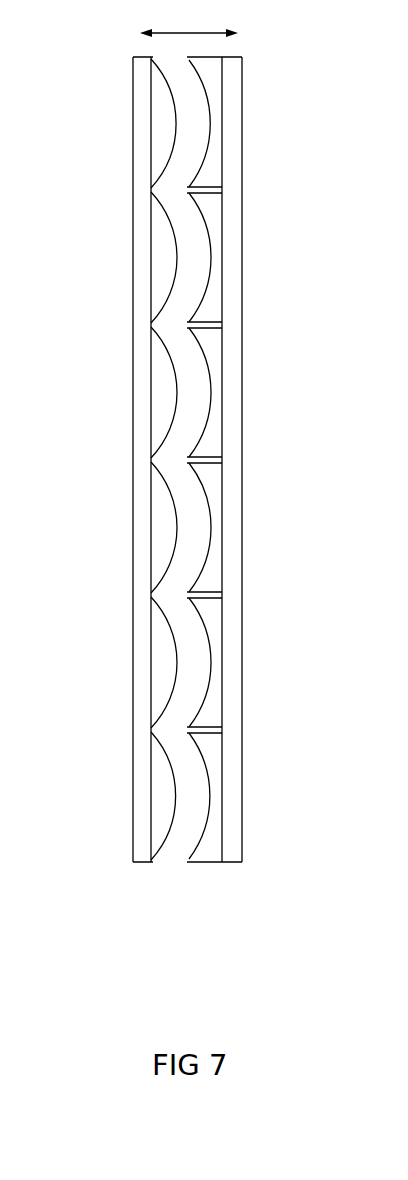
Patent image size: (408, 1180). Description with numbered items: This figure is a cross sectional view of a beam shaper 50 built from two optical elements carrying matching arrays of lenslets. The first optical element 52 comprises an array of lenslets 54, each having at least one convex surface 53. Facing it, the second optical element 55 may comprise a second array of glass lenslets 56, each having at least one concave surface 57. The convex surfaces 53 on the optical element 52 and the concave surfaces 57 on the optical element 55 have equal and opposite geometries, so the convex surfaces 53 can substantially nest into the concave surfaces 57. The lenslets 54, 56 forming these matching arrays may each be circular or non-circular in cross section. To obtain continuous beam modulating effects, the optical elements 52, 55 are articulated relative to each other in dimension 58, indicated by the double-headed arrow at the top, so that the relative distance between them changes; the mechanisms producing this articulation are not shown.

The beam shaper 50 is at (105, 82).
The optical element 52 is at (138, 290).
The convex surface 53 is at (172, 427).
The array of lenslets 54 is at (167, 388).
The optical element 55 is at (232, 298).
The array of glass lenslets 56 is at (217, 438).
The concave surface 57 is at (212, 378).
The dimension 58 is at (189, 22).